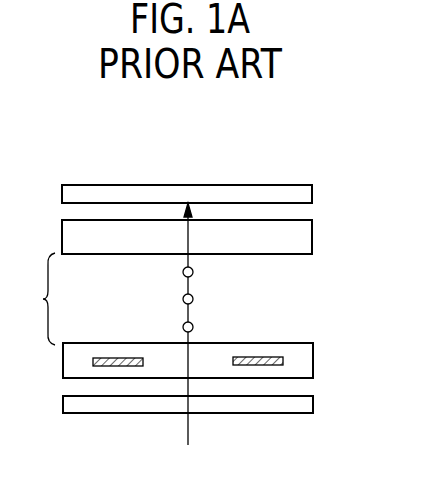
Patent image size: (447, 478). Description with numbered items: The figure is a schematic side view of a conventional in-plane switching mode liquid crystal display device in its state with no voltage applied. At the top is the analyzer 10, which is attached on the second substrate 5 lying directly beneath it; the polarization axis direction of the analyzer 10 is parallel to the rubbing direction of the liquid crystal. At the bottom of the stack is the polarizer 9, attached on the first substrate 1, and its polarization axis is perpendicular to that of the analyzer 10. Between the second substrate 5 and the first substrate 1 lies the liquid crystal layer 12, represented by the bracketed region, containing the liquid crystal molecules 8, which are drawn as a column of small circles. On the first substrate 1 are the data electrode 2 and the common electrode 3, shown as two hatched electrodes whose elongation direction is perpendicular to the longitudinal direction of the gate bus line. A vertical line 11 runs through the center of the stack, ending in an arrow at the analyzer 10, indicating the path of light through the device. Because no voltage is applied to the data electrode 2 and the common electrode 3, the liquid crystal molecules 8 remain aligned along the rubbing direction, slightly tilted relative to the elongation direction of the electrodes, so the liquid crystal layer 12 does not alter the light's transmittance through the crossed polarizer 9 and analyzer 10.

The analyzer 10 is at (312, 193).
The second substrate 5 is at (312, 237).
The first substrate 1 is at (313, 358).
The polarizer 9 is at (313, 402).
The data electrode 2 is at (124, 358).
The common electrode 3 is at (262, 357).
The center axis 11 is at (188, 430).
The liquid crystal molecules 8 is at (193, 274).
The liquid crystal layer 12 is at (36, 299).